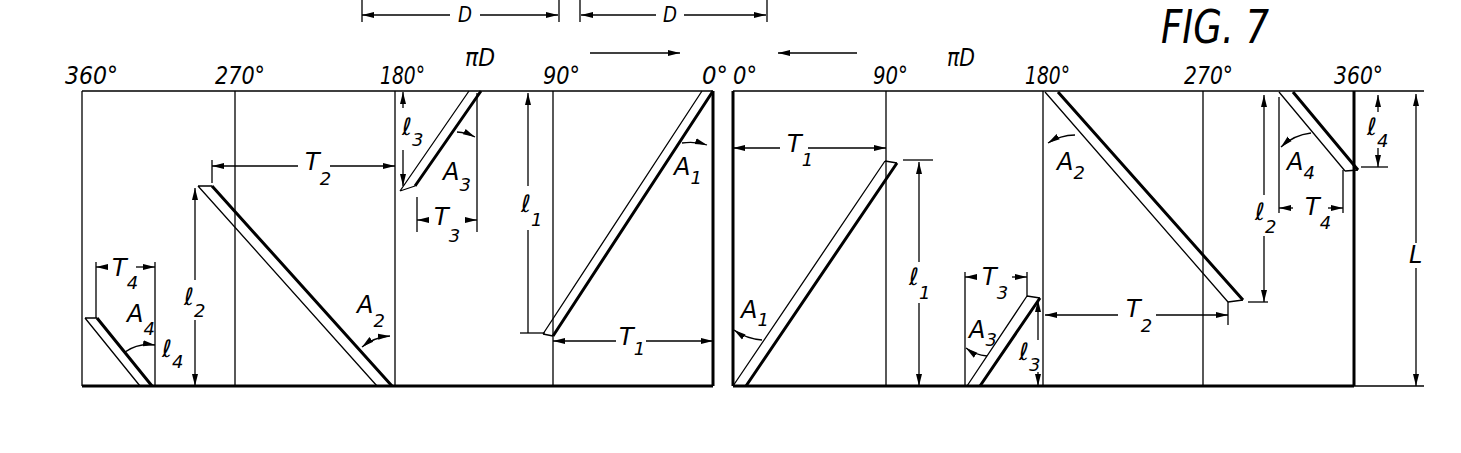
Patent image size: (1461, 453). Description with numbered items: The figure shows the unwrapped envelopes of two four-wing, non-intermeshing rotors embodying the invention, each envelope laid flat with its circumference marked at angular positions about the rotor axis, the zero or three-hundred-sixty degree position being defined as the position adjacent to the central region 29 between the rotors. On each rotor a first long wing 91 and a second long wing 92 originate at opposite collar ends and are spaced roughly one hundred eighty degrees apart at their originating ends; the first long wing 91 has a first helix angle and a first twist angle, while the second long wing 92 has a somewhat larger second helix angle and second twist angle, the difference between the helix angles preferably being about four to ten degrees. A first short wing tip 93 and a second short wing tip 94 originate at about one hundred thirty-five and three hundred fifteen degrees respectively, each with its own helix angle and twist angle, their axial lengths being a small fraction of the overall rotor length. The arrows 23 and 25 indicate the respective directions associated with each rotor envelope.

The direction of rotation arrow 23 is at (643, 56).
The direction of rotation arrow 25 is at (825, 56).
The central region 29 is at (721, 228).
The first long wing 91 is at (616, 246).
The second long wing 92 is at (297, 283).
The first short wing tip 93 is at (400, 191).
The second short wing tip 94 is at (132, 366).